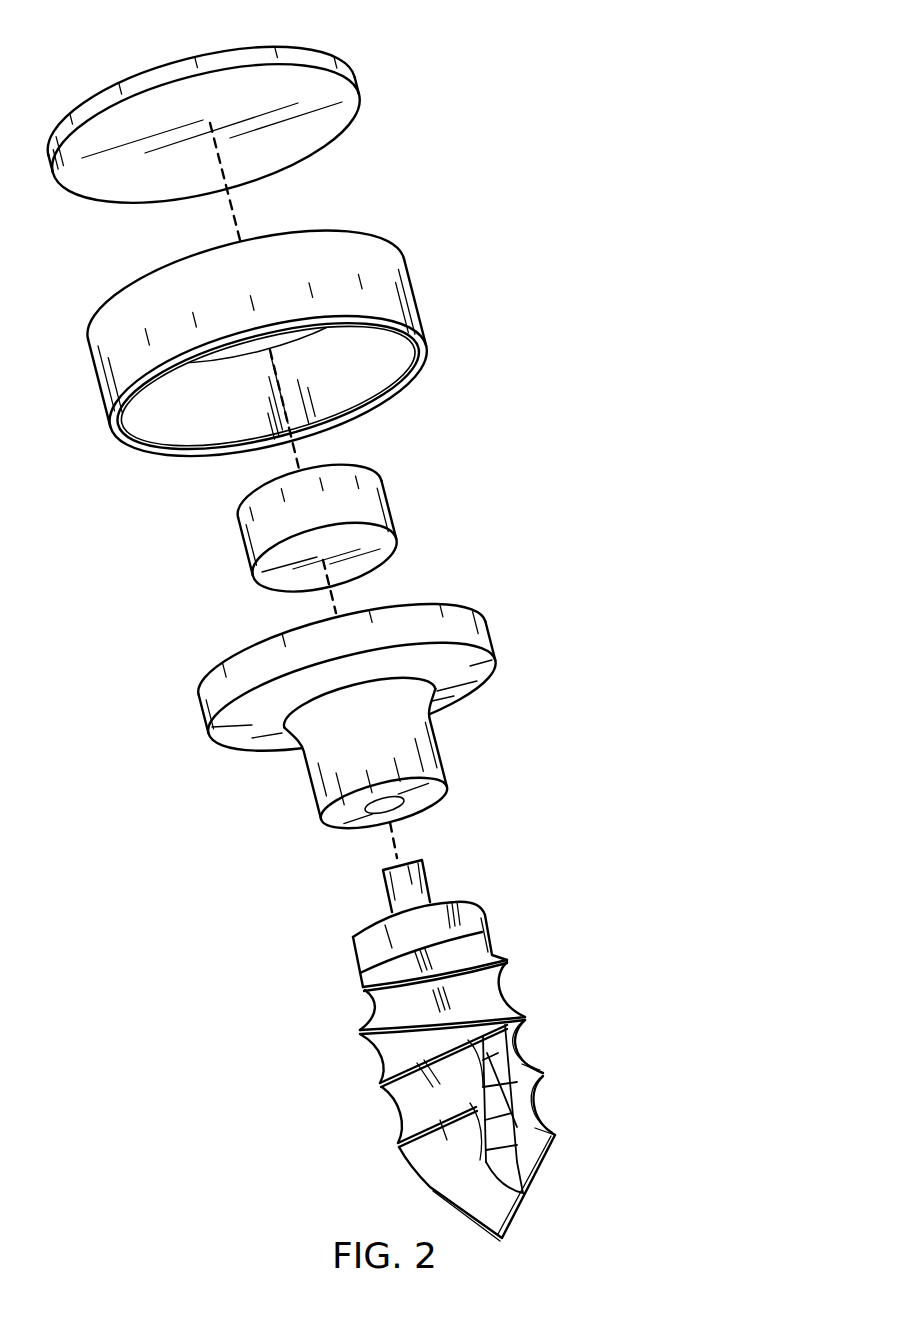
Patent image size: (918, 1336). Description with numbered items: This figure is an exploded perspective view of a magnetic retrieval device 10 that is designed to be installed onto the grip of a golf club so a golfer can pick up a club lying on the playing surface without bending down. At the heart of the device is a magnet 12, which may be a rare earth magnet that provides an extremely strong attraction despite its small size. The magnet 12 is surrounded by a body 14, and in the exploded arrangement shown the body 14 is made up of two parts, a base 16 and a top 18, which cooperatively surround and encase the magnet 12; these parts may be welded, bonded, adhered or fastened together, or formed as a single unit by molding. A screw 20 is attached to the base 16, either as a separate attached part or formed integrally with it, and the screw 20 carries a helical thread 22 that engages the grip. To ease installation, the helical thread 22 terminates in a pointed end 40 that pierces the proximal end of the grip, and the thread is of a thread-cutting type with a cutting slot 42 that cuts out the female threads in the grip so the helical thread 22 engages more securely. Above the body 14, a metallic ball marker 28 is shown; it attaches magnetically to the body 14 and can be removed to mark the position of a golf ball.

The magnetic retrieval device 10 is at (543, 165).
The magnet 12 is at (370, 492).
The body 14 is at (335, 522).
The base 16 is at (490, 635).
The top 18 is at (392, 267).
The screw 20 is at (482, 1051).
The helical thread 22 is at (547, 1072).
The metallic ball marker 28 is at (355, 89).
The pointed end 40 is at (512, 1225).
The cutting slot 42 is at (528, 1152).